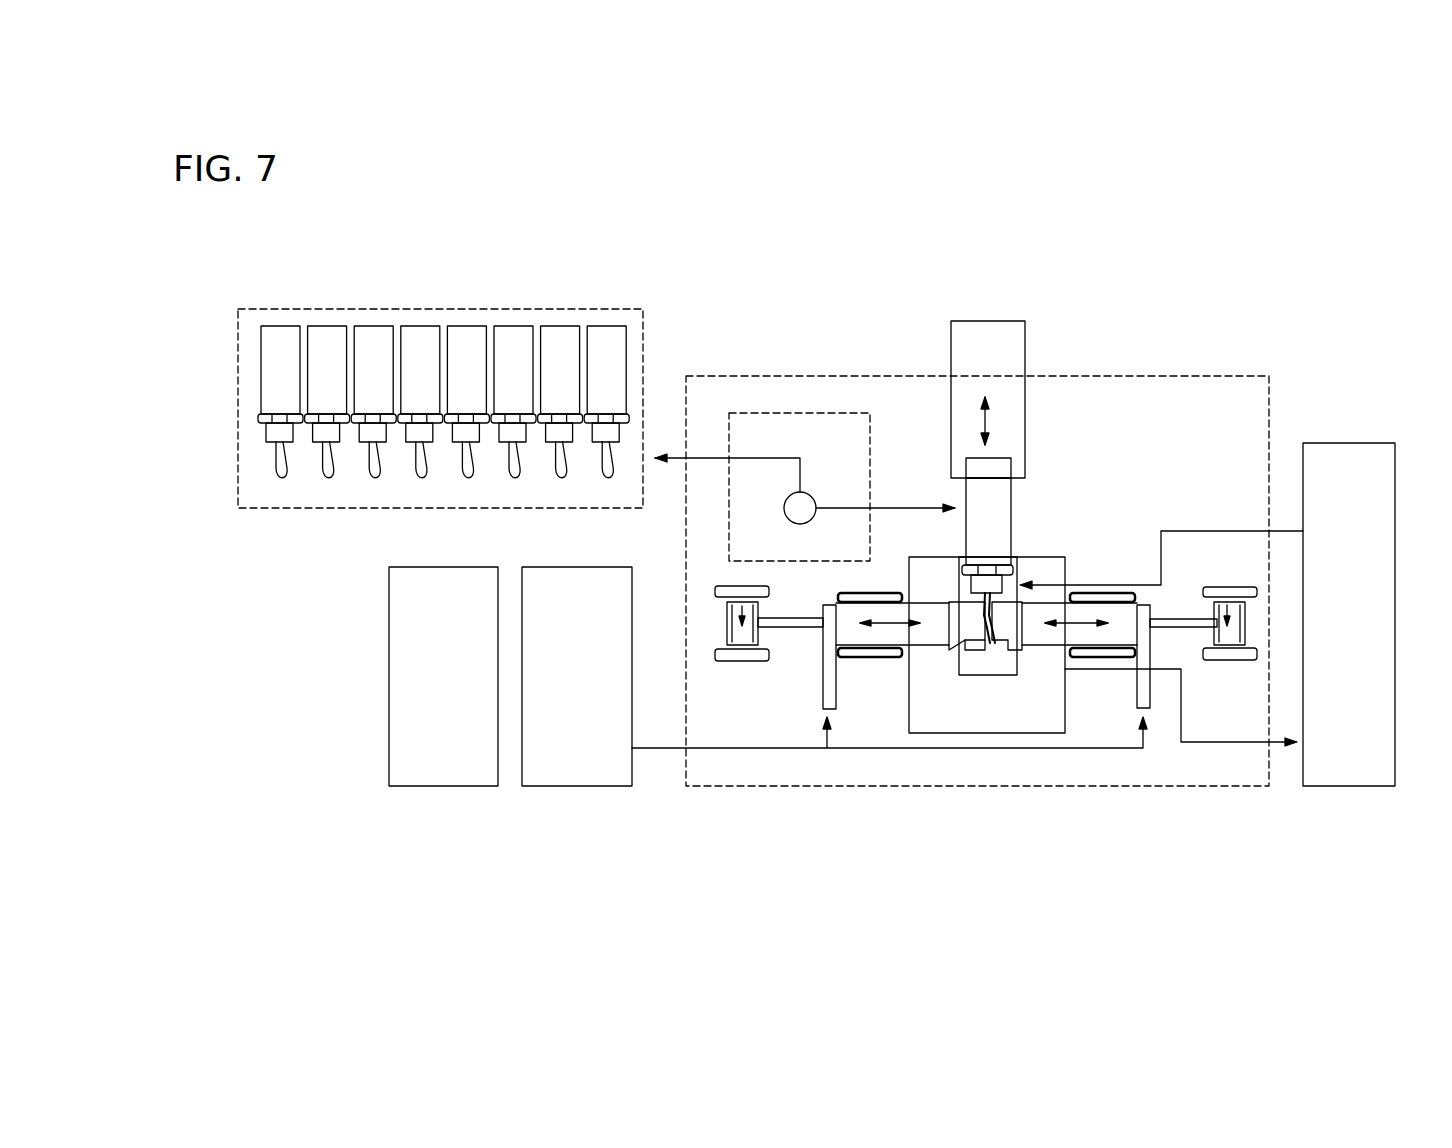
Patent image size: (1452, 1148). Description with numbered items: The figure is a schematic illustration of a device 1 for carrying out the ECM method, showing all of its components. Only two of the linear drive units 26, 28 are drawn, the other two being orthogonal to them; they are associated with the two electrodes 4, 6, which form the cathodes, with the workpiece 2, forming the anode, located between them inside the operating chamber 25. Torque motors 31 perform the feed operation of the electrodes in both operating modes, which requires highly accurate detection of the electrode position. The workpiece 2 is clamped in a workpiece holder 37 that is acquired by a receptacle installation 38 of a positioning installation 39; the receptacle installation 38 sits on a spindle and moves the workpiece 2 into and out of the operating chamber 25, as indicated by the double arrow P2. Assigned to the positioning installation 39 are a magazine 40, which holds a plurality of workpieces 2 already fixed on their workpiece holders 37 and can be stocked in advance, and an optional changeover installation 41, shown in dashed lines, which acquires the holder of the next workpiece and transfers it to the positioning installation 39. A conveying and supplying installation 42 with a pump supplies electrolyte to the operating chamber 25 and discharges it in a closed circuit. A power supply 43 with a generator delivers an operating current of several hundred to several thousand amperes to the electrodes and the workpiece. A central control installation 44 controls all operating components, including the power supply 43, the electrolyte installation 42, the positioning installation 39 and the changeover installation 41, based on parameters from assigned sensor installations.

The device 1 is at (1185, 315).
The workpiece 2 is at (470, 478).
The electrode 4 is at (960, 633).
The electrode 6 is at (1013, 630).
The operating chamber 25 is at (1038, 668).
The linear drive unit 26 is at (804, 665).
The linear drive unit 28 is at (1101, 678).
The torque motor 31 is at (733, 618).
The workpiece holder 37 is at (512, 342).
The receptacle installation 38 is at (993, 467).
The positioning installation 39 is at (938, 344).
The magazine 40 is at (558, 284).
The changeover installation 41 is at (796, 405).
The conveying and supplying installation 42 is at (1347, 450).
The power supply 43 is at (569, 770).
The central control installation 44 is at (429, 775).
The double arrow P2 is at (988, 427).